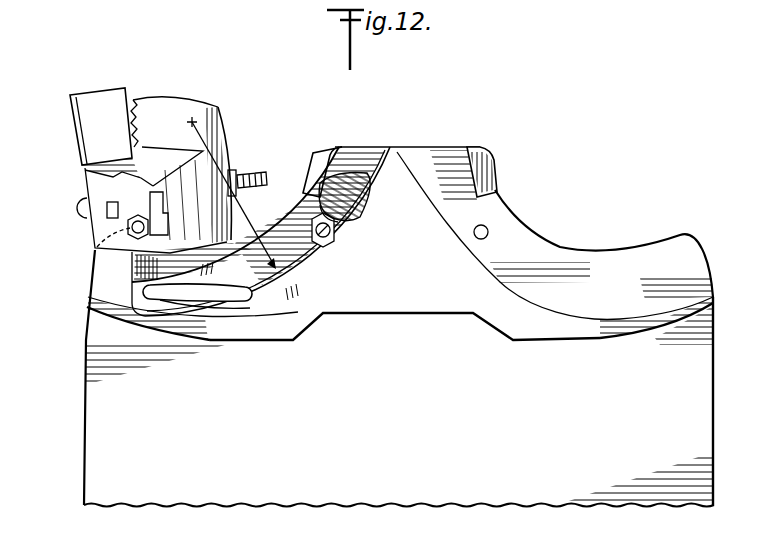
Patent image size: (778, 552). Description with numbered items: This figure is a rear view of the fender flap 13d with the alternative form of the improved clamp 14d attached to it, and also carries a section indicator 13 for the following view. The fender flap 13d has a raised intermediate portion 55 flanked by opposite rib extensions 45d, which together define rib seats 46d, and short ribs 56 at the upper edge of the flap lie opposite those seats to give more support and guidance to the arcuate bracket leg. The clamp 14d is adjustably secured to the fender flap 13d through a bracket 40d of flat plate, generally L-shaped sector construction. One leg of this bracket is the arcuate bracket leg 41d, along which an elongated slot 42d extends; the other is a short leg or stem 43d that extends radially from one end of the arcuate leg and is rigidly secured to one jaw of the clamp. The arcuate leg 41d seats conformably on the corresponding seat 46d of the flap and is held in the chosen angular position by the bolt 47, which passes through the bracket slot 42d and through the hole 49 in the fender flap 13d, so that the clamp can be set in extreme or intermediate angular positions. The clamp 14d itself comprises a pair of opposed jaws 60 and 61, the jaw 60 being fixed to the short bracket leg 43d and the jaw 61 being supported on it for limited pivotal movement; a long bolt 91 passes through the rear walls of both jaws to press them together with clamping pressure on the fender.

The fender flap 13d is at (412, 417).
The clamp 14d is at (108, 85).
The bracket 40d is at (306, 268).
The arcuate bracket leg 41d is at (220, 310).
The elongated slot 42d is at (246, 292).
The short leg or stem 43d is at (137, 270).
The rib extensions 45d is at (172, 324).
The rib seats 46d is at (110, 296).
The bolt 47 is at (355, 212).
The hole 49 is at (474, 238).
The raised intermediate portion 55 is at (402, 147).
The short ribs 56 is at (331, 150).
The jaw 60 is at (70, 128).
The jaw 61 is at (164, 100).
The long bolt 91 is at (80, 200).
The section line for FIG. 13 is at (290, 197).